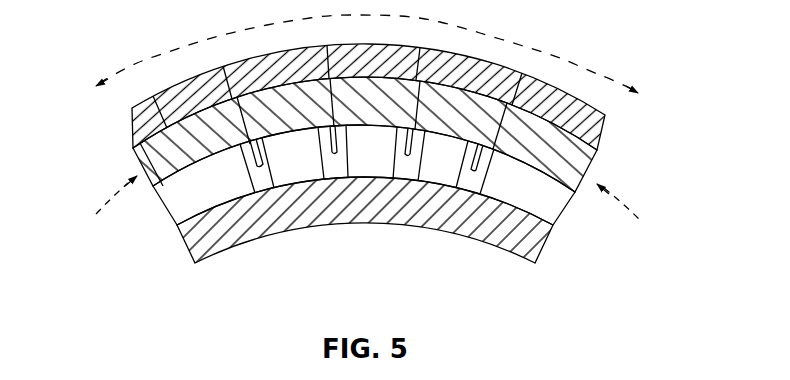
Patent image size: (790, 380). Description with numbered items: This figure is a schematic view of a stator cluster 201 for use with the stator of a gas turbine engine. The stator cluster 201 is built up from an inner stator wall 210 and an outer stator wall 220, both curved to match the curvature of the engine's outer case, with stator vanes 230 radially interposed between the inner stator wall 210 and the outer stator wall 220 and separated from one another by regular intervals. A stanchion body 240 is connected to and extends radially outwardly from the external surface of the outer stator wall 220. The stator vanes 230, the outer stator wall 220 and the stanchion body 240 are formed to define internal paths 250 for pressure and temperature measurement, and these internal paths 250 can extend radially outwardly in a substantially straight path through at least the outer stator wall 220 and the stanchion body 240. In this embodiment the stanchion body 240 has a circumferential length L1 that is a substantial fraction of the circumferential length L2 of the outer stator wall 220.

The stator cluster 201 is at (386, 178).
The inner stator wall 210 is at (222, 242).
The outer stator wall 220 is at (135, 158).
The stator vanes 230 is at (402, 146).
The stanchion body 240 is at (135, 116).
The internal paths 250 is at (320, 128).
The circumferential length of the stanchion body L1 is at (214, 40).
The circumferential length of the outer wall L2 is at (97, 214).